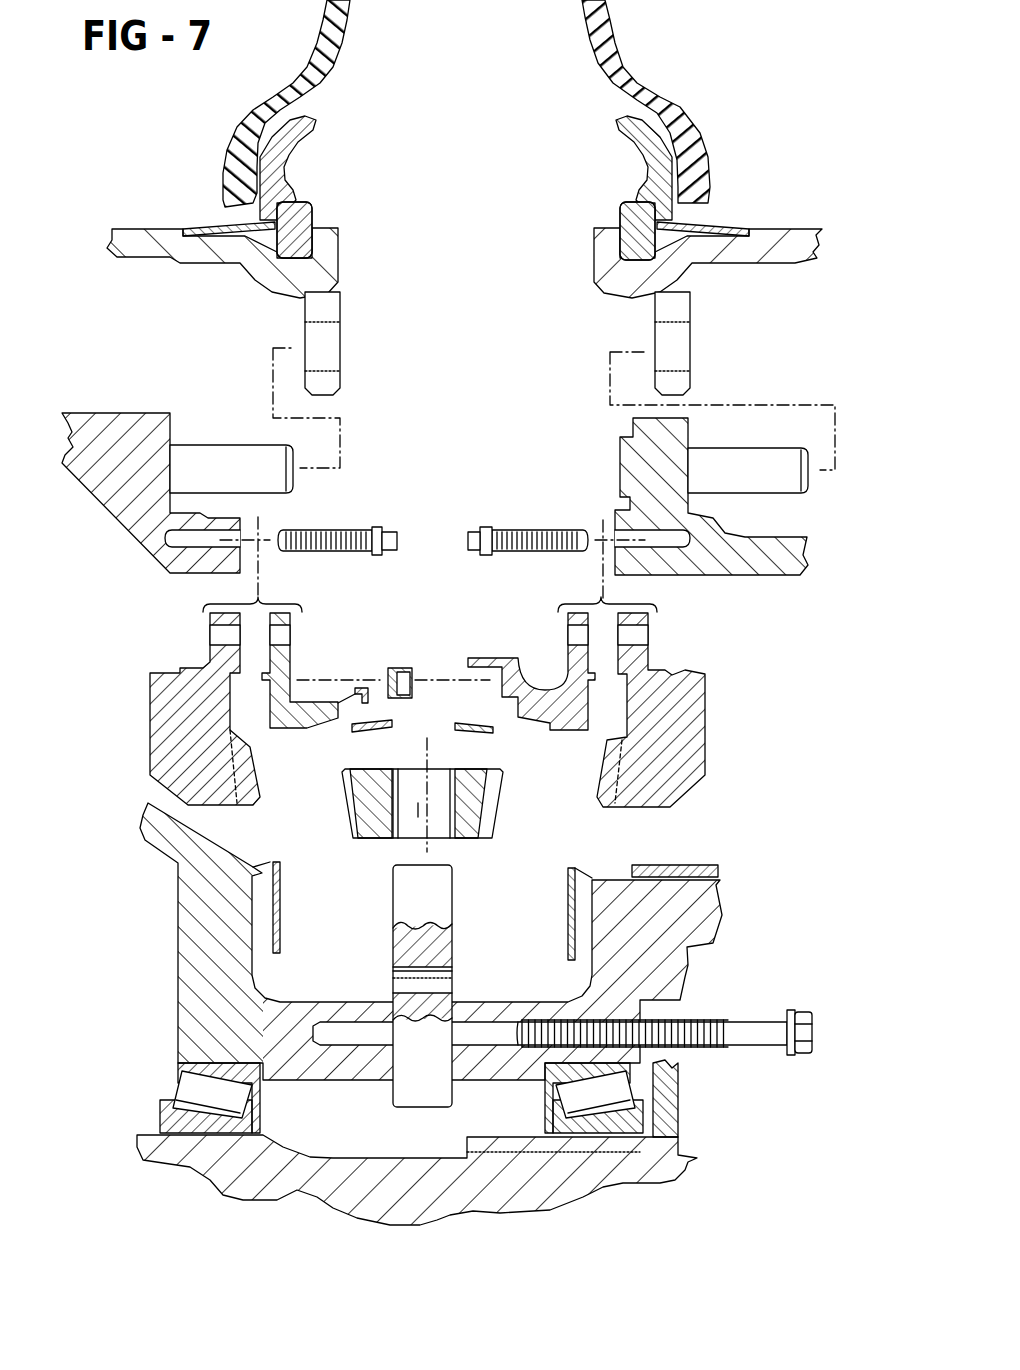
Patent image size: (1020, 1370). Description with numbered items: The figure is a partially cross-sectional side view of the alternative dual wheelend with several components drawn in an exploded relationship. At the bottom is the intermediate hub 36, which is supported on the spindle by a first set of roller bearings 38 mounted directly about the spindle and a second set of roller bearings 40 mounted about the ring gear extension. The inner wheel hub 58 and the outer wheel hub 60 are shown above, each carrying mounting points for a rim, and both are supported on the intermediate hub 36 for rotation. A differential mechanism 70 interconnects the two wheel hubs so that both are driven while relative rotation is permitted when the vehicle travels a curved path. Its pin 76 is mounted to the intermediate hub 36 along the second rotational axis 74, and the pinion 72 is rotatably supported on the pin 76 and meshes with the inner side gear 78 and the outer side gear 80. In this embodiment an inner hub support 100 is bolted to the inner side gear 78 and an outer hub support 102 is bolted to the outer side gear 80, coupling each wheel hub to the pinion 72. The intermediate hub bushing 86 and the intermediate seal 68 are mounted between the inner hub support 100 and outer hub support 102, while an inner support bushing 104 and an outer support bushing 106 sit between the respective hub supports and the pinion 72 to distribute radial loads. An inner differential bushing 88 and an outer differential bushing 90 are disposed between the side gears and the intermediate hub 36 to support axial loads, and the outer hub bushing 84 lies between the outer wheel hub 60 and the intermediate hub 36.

The intermediate hub 36 is at (200, 942).
The first set of roller bearings 38 is at (225, 1095).
The second set of roller bearings 40 is at (580, 1098).
The inner wheel hub 58 is at (127, 503).
The outer wheel hub 60 is at (742, 567).
The intermediate seal 68 is at (392, 668).
The differential mechanism 70 is at (707, 818).
The pinion 72 is at (463, 823).
The second rotational axis 74 is at (427, 842).
The pin 76 is at (448, 908).
The inner side gear 78 is at (162, 718).
The outer side gear 80 is at (693, 730).
The outer hub bushing 84 is at (690, 865).
The intermediate hub bushing 86 is at (368, 702).
The inner differential bushing 88 is at (281, 920).
The outer differential bushing 90 is at (568, 925).
The inner hub support 100 is at (283, 662).
The outer hub support 102 is at (518, 682).
The inner support bushing 104 is at (370, 732).
The outer support bushing 106 is at (472, 735).